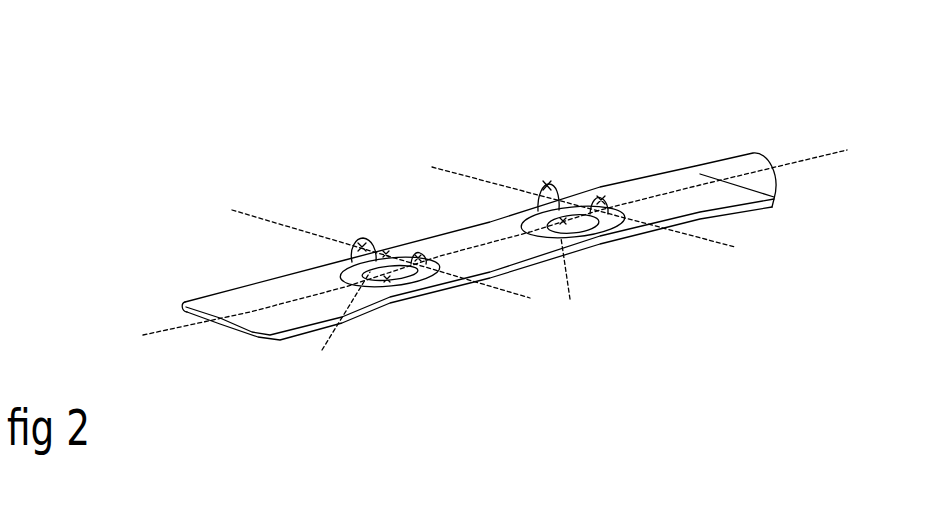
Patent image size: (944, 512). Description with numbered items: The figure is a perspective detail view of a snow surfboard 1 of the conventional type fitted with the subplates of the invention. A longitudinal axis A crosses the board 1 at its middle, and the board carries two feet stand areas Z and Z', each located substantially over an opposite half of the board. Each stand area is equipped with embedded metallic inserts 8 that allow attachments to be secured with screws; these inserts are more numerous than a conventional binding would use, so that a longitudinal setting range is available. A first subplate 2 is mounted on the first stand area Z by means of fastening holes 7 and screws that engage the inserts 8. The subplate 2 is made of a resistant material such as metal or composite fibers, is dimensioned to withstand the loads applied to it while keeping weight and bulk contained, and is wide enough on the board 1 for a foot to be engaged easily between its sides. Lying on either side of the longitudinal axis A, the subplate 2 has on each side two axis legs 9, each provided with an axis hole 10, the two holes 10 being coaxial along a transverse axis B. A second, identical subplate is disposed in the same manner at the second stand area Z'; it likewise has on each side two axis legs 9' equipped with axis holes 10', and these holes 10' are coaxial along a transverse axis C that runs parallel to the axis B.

The snow surfboard 1 is at (58, 180).
The first subplate 2 is at (395, 285).
The fastening holes 7 is at (386, 260).
The embedded metallic inserts 8 is at (388, 282).
The axis legs 9 is at (283, 368).
The axis hole 10 is at (545, 345).
The axis legs of second subplate 9' is at (574, 110).
The axis hole of second subplate 10' is at (653, 122).
The longitudinal axis A is at (483, 258).
The transverse axis B is at (364, 232).
The transverse axis C is at (583, 180).
The first feet stand area Z is at (337, 330).
The second feet stand area Z' is at (576, 290).